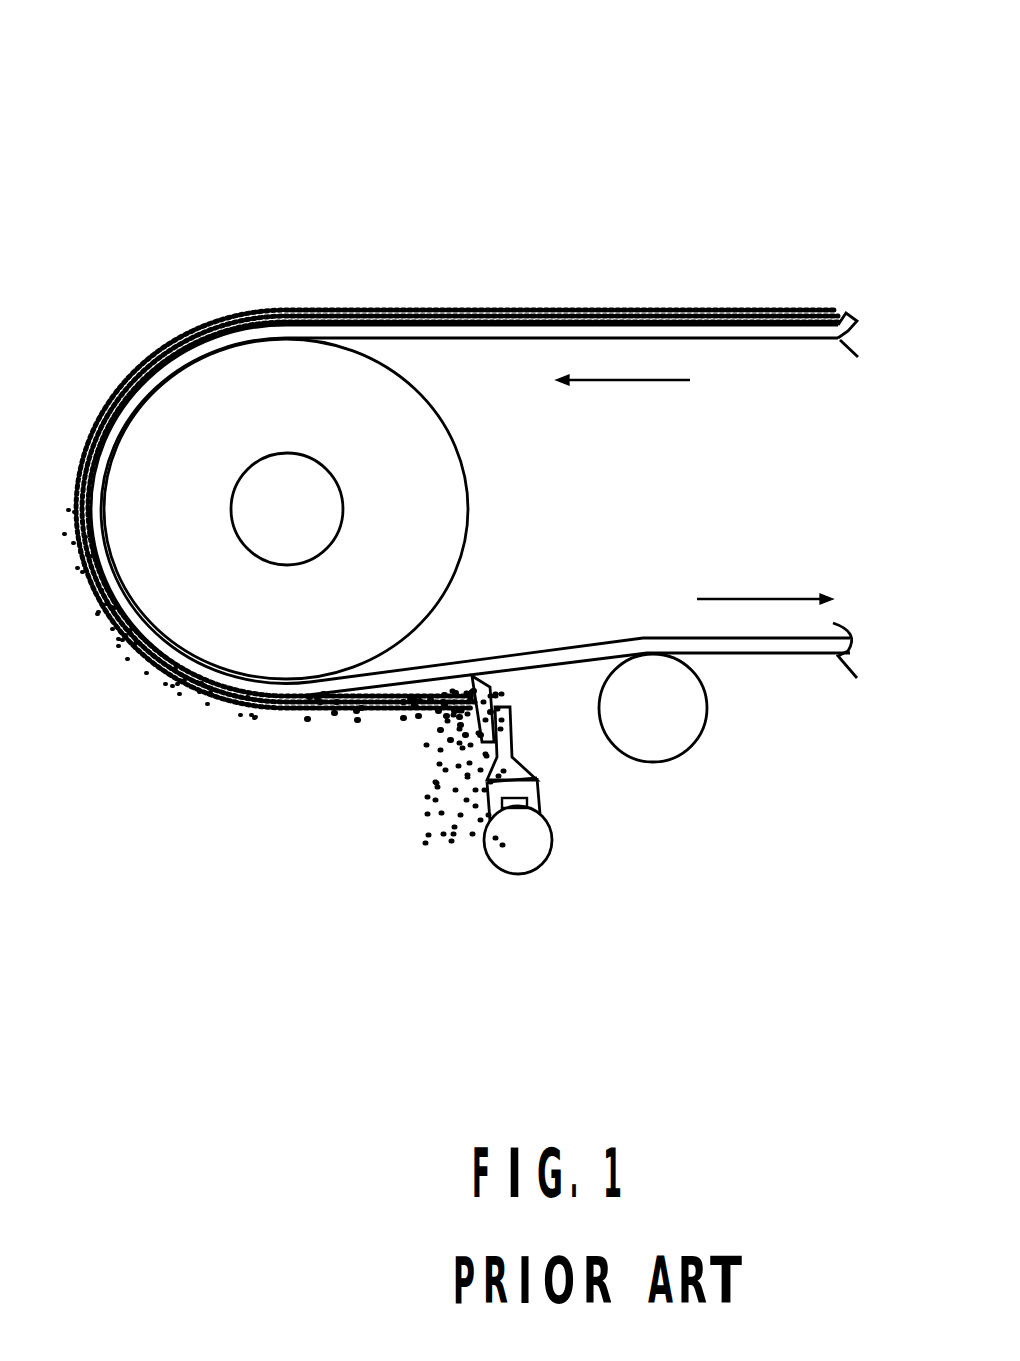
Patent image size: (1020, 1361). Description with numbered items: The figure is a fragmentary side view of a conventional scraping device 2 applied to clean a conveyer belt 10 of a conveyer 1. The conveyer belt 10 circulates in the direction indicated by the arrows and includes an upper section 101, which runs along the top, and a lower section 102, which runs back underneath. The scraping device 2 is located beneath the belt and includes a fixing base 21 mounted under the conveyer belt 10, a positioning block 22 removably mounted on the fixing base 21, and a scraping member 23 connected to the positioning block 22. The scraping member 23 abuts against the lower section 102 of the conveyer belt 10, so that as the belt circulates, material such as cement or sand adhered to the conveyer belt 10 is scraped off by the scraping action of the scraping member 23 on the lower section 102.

The conveyer 1 is at (461, 428).
The conveyer belt 10 is at (461, 523).
The upper section 101 is at (298, 335).
The lower section 102 is at (332, 685).
The scraping device 2 is at (473, 769).
The fixing base 21 is at (510, 858).
The positioning block 22 is at (512, 737).
The scraping member 23 is at (490, 690).